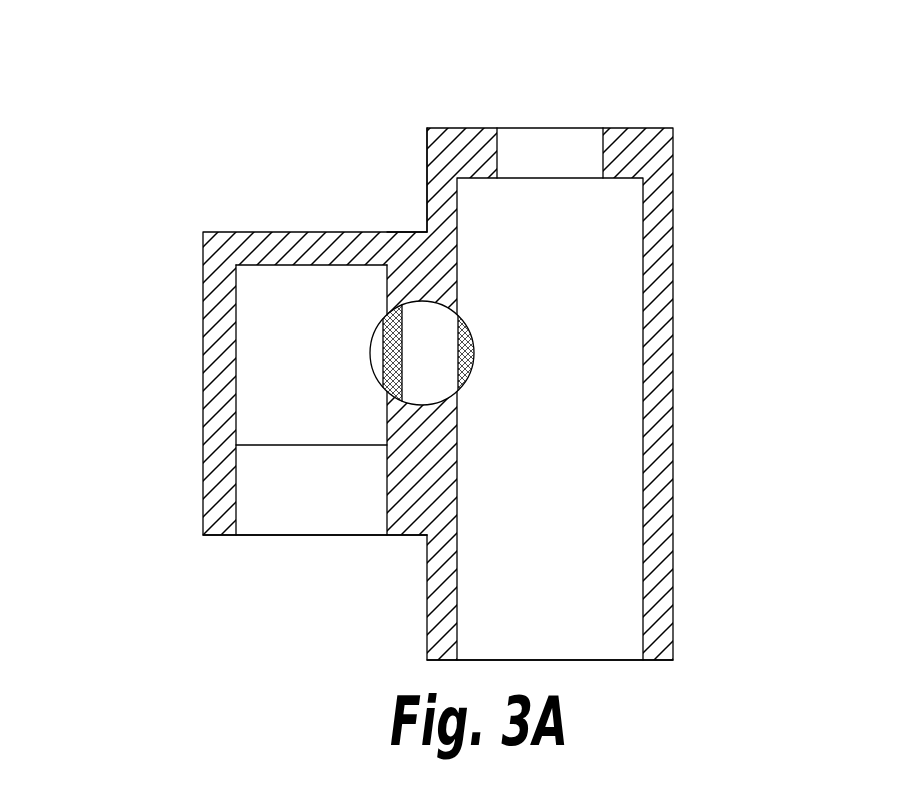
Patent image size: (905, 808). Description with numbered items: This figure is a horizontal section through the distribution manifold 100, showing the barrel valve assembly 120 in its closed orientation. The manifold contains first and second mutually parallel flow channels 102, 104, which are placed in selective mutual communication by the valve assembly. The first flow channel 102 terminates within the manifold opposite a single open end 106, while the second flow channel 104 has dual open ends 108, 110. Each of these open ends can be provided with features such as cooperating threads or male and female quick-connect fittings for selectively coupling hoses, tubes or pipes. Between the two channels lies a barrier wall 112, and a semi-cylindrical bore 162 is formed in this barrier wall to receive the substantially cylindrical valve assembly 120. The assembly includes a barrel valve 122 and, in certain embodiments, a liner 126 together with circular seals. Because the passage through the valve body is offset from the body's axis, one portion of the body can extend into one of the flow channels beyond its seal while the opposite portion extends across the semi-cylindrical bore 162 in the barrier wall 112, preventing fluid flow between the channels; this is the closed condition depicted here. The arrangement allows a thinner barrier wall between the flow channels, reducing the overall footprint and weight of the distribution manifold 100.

The distribution manifold 100 is at (260, 182).
The first flow channel 102 is at (203, 310).
The second flow channel 104 is at (673, 250).
The open end 106 is at (267, 535).
The open end 108 is at (542, 150).
The open end 110 is at (610, 662).
The barrier wall 112 is at (427, 470).
The barrel valve assembly 120 is at (420, 300).
The barrel valve 122 is at (383, 363).
The liner 126 is at (383, 342).
The semi-cylindrical bore 162 is at (424, 404).